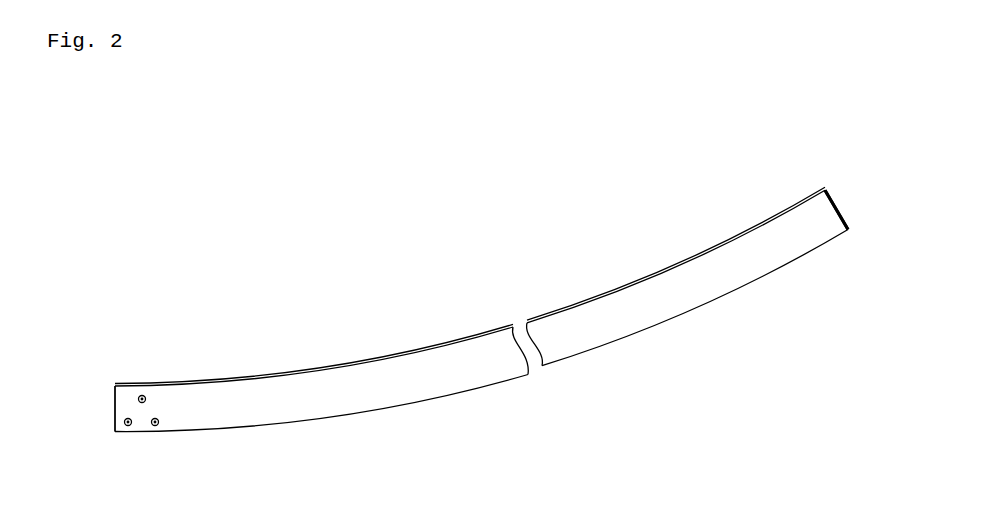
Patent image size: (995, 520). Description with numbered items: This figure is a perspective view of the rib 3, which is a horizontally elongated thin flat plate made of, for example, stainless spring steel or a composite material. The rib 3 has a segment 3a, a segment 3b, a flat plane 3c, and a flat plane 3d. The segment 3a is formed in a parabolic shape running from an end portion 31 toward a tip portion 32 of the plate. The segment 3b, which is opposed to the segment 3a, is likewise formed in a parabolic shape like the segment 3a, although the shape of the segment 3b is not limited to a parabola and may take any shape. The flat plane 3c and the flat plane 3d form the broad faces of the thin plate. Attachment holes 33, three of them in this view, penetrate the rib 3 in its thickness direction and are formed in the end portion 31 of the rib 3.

The rib 3 is at (795, 248).
The segment 3a is at (422, 351).
The segment 3b is at (468, 387).
The flat plane 3c is at (287, 406).
The flat plane 3d is at (305, 387).
The end portion 31 is at (142, 368).
The tip portion 32 is at (807, 178).
The attachment holes 33 is at (117, 440).